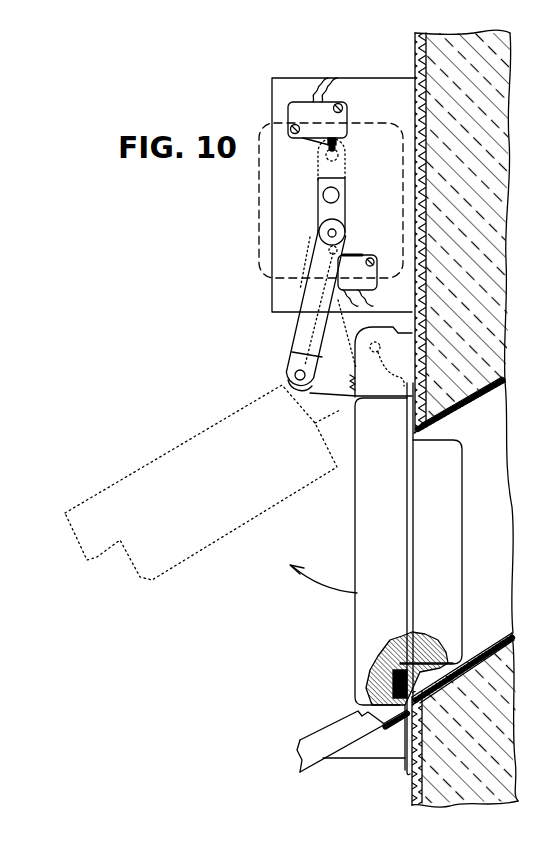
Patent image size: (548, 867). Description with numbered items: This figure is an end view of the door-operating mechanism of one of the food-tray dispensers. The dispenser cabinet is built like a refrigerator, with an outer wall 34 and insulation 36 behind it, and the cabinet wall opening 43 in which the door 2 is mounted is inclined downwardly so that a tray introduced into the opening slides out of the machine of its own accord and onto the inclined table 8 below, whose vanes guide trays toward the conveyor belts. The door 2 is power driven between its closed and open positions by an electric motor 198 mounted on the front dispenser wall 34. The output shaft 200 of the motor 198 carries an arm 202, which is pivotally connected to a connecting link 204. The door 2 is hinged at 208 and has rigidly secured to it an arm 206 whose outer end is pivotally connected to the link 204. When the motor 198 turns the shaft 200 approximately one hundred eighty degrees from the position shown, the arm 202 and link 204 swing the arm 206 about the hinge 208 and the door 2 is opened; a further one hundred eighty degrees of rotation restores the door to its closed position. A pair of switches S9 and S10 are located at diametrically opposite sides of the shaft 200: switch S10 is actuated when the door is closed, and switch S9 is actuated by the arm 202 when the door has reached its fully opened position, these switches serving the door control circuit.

The door 2 is at (175, 443).
The inclined table 8 is at (320, 757).
The outer wall 34 is at (415, 43).
The insulation 36 is at (500, 72).
The cabinet wall opening 43 is at (480, 404).
The electric motor 198 is at (258, 188).
The output shaft 200 is at (318, 185).
The arm 202 is at (347, 204).
The connecting link 204 is at (312, 238).
The door arm 206 is at (297, 343).
The door hinge 208 is at (400, 376).
The switch S9 is at (290, 110).
The switch S10 is at (388, 232).